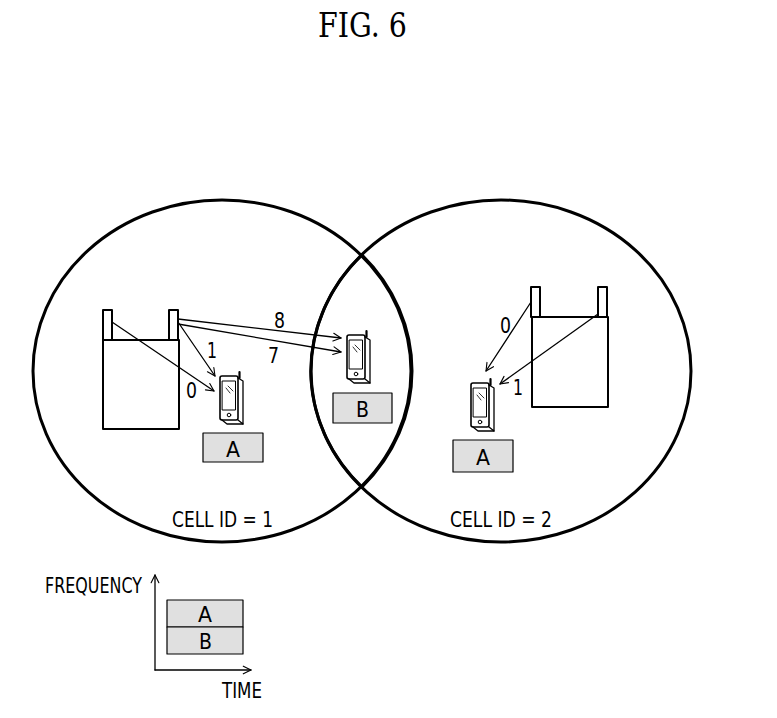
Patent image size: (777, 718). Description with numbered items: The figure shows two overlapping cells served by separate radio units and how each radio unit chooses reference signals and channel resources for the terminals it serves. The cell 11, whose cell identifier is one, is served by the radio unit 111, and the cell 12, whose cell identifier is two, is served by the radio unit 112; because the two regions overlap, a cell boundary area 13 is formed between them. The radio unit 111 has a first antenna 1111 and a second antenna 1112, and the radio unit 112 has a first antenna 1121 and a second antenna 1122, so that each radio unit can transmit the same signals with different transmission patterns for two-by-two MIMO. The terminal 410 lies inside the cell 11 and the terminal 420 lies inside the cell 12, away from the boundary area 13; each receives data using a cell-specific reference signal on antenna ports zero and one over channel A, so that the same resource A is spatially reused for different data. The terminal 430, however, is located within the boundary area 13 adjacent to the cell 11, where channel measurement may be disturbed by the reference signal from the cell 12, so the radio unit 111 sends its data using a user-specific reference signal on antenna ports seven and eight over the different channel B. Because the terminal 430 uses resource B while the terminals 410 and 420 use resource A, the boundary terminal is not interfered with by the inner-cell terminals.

The cell 11 is at (205, 201).
The cell 12 is at (521, 201).
The cell boundary area 13 is at (355, 460).
The radio unit 111 is at (142, 430).
The radio unit 112 is at (570, 408).
The first antenna 1111 is at (102, 318).
The second antenna 1112 is at (180, 313).
The first antenna 1121 is at (530, 292).
The second antenna 1122 is at (607, 310).
The terminal 410 is at (244, 399).
The terminal 420 is at (470, 402).
The terminal 430 is at (353, 334).